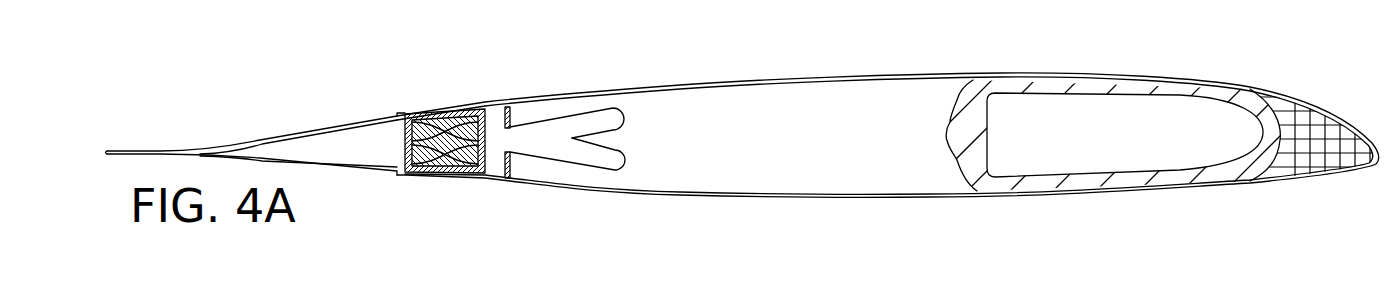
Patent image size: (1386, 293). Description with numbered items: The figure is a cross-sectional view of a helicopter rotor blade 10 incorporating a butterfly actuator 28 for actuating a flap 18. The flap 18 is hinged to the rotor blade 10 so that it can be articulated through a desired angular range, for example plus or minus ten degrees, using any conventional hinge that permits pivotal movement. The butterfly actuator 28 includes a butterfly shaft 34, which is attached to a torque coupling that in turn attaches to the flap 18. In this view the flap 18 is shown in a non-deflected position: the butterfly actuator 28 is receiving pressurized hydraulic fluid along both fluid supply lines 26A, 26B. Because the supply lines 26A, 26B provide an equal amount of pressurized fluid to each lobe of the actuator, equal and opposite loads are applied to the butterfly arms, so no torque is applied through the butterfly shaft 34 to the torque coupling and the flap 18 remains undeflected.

The rotor blade 10 is at (760, 78).
The flap 18 is at (303, 133).
The butterfly actuator 28 is at (448, 116).
The butterfly shaft 34 is at (438, 155).
The first fluid supply line 26A is at (585, 122).
The second fluid supply line 26B is at (613, 162).